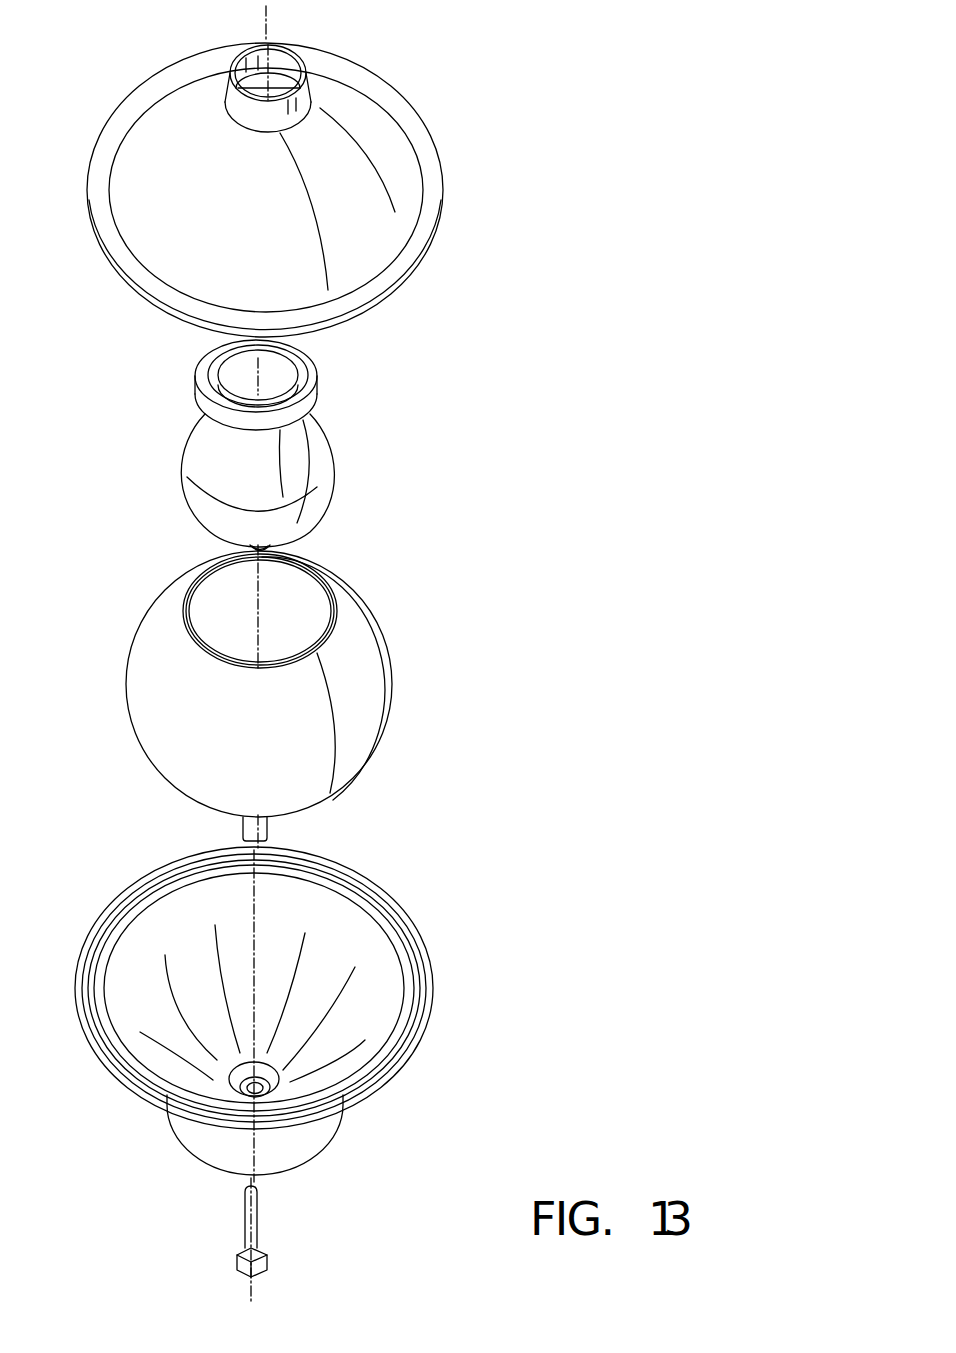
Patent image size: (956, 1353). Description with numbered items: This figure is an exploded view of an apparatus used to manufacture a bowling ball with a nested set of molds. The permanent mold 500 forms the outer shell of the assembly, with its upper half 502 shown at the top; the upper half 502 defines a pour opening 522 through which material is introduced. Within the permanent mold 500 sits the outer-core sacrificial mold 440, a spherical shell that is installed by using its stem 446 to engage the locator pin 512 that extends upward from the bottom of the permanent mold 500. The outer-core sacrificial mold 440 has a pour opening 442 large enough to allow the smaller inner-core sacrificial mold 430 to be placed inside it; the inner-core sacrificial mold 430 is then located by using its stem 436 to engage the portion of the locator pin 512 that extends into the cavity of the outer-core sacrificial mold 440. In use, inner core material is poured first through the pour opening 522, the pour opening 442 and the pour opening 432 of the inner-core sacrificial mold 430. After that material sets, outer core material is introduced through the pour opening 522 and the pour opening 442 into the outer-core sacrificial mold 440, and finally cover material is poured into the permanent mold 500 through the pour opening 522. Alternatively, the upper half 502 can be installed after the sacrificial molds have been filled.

The permanent mold 500 is at (437, 963).
The upper half of permanent mold 502 is at (443, 198).
The pour opening 522 is at (287, 70).
The inner-core sacrificial mold 430 is at (313, 440).
The pour opening 432 is at (317, 339).
The stem 436 is at (268, 548).
The outer-core sacrificial mold 440 is at (393, 653).
The pour opening 442 is at (233, 590).
The stem 446 is at (263, 827).
The locator pin 512 is at (258, 1232).